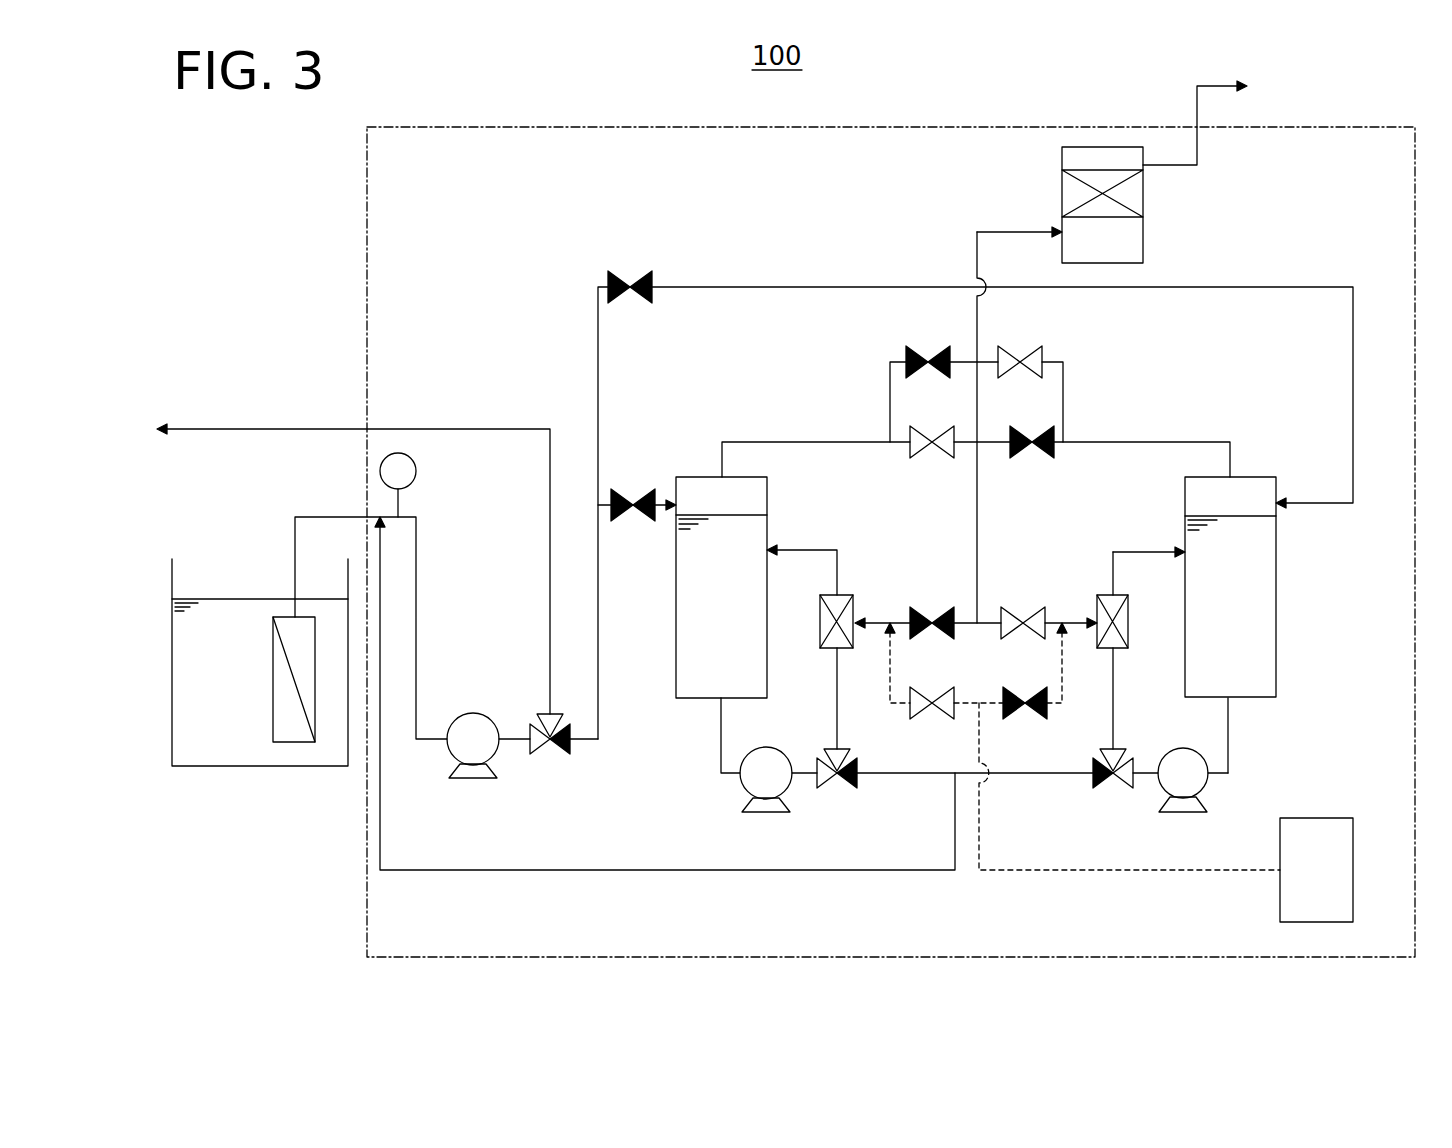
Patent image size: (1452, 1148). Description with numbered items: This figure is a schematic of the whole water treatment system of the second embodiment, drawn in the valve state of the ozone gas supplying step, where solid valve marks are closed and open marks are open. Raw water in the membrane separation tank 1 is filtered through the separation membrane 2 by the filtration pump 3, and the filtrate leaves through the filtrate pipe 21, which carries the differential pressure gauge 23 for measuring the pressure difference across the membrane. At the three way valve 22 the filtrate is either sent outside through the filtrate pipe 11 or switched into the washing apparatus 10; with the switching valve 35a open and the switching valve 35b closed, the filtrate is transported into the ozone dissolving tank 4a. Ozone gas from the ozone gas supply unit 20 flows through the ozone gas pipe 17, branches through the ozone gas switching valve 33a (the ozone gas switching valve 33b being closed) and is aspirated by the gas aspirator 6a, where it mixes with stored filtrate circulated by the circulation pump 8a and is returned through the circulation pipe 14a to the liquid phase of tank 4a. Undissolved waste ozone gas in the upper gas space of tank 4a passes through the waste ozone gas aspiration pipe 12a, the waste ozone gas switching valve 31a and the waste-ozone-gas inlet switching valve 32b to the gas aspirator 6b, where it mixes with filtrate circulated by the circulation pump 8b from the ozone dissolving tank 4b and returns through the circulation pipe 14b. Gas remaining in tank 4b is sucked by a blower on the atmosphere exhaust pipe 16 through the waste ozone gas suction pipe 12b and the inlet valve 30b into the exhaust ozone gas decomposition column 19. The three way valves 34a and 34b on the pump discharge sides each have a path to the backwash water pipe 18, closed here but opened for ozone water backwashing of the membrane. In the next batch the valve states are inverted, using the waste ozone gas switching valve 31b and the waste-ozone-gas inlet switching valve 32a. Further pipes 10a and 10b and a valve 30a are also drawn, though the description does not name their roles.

The membrane separation tank 1 is at (183, 767).
The separation membrane 2 is at (290, 745).
The filtration pump 3 is at (480, 712).
The ozone dissolving tank 4a is at (687, 476).
The ozone dissolving tank 4b is at (1278, 580).
The gas aspirator 6a is at (850, 592).
The gas aspirator 6b is at (1112, 593).
The circulation pump 8a is at (740, 784).
The circulation pump 8b is at (1200, 790).
The washing apparatus 10 is at (367, 190).
The first circulation pipe 10a is at (720, 740).
The second circulation pipe 10b is at (1232, 740).
The filtrate pipe 11 is at (243, 428).
The waste ozone gas aspiration pipe 12a is at (810, 442).
The waste ozone gas suction pipe 12b is at (1162, 441).
The circulation pipe 14a is at (828, 550).
The circulation pipe 14b is at (1150, 550).
The atmosphere exhaust pipe 16 is at (1210, 143).
The ozone gas pipe 17 is at (1112, 872).
The backwash water pipe 18 is at (515, 870).
The exhaust ozone gas decomposition column 19 is at (1062, 163).
The ozone gas supply unit 20 is at (1280, 890).
The filtrate pipe 21 is at (295, 545).
The three way valve 22 is at (550, 755).
The differential pressure gauge 23 is at (418, 466).
The first gas valve 30a is at (944, 376).
The inlet valve for the exhaust ozone gas decomposition column 30b is at (1030, 376).
The waste ozone gas switching valve 31a is at (960, 426).
The waste ozone gas switching valve 31b is at (1029, 426).
The waste-ozone-gas inlet switching valve 32a is at (928, 606).
The waste-ozone-gas inlet switching valve 32b is at (1047, 606).
The ozone gas switching valve 33a is at (944, 671).
The ozone gas switching valve 33b is at (1032, 671).
The three way valve 34a is at (850, 787).
The three way valve 34b is at (1095, 787).
The switching valve 35a is at (637, 527).
The switching valve 35b is at (975, 488).